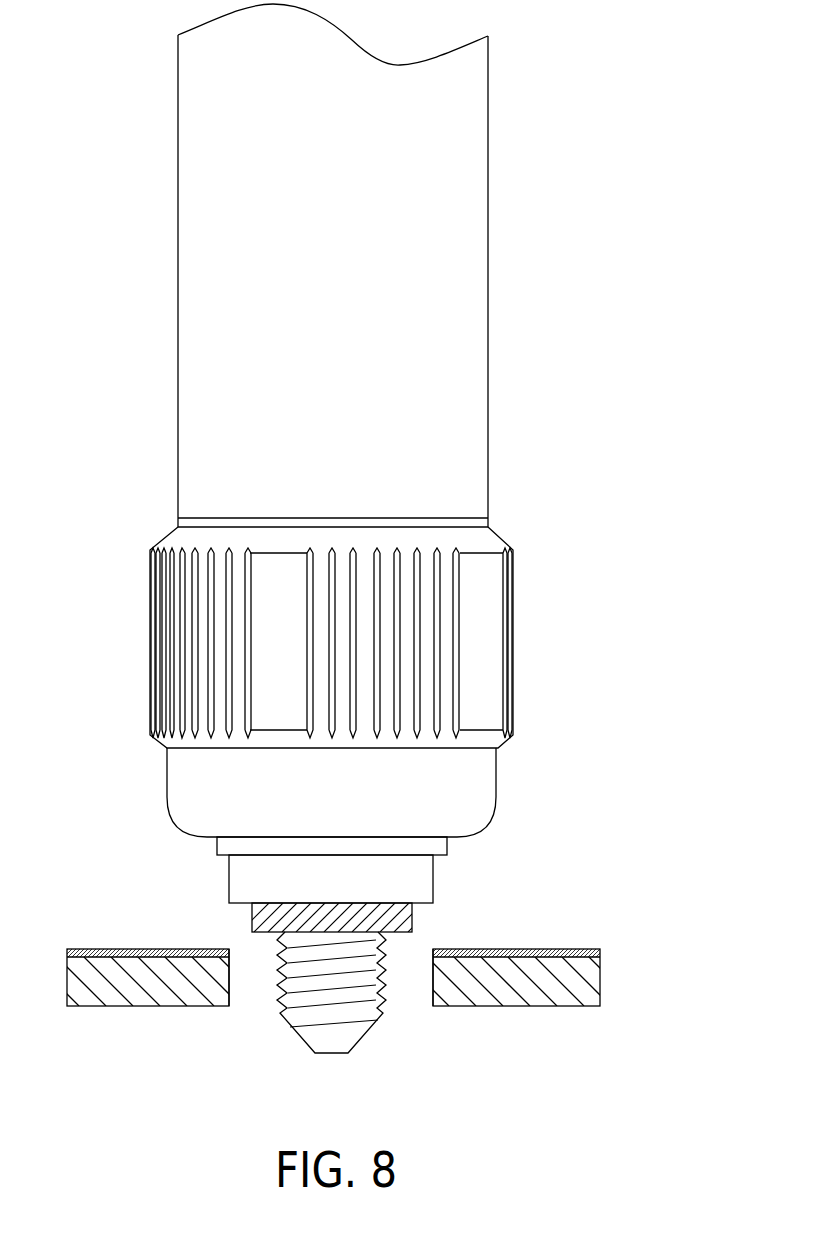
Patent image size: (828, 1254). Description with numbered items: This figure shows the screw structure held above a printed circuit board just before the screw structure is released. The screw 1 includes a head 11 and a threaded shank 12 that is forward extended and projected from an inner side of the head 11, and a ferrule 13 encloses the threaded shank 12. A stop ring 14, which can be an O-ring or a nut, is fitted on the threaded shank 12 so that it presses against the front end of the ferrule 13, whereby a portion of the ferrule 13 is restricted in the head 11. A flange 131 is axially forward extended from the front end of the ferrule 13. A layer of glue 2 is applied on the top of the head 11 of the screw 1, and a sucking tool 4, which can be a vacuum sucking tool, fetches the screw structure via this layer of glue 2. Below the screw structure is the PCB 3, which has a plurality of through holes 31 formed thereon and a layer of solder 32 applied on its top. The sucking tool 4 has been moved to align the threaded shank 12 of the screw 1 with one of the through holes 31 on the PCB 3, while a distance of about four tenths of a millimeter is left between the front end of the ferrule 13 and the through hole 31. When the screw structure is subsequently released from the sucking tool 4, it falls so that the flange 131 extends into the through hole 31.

The screw 1 is at (600, 771).
The layer of glue 2 is at (182, 524).
The PCB 3 is at (371, 986).
The sucking tool 4 is at (195, 393).
The head 11 is at (480, 630).
The threaded shank 12 is at (370, 988).
The ferrule 13 is at (447, 845).
The stop ring 14 is at (252, 920).
The through hole 31 is at (258, 992).
The layer of solder 32 is at (595, 958).
The flange 131 is at (433, 878).